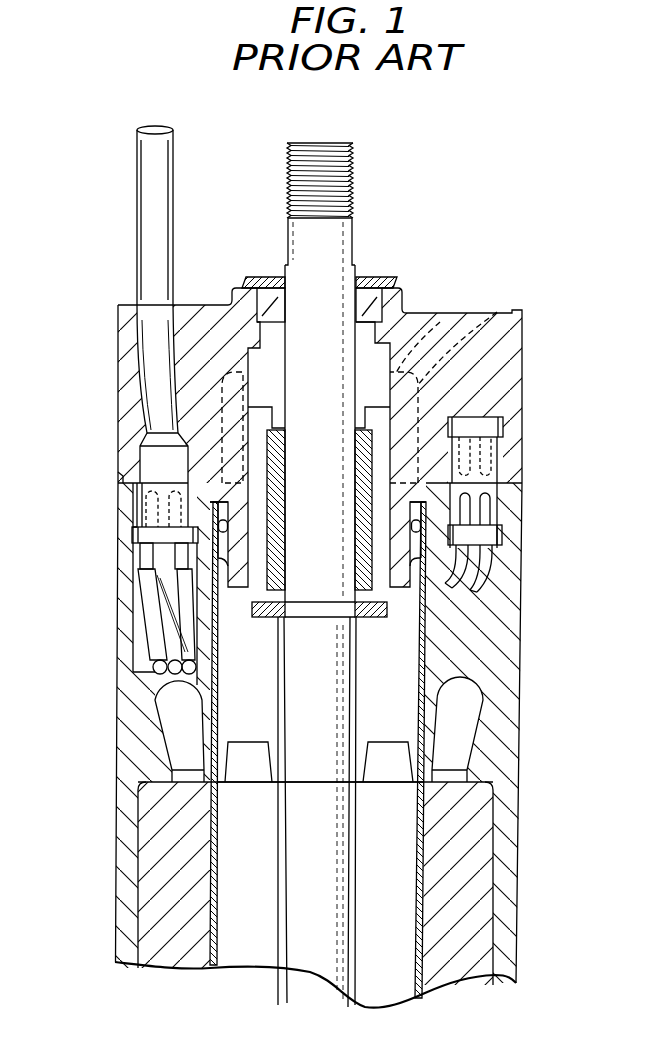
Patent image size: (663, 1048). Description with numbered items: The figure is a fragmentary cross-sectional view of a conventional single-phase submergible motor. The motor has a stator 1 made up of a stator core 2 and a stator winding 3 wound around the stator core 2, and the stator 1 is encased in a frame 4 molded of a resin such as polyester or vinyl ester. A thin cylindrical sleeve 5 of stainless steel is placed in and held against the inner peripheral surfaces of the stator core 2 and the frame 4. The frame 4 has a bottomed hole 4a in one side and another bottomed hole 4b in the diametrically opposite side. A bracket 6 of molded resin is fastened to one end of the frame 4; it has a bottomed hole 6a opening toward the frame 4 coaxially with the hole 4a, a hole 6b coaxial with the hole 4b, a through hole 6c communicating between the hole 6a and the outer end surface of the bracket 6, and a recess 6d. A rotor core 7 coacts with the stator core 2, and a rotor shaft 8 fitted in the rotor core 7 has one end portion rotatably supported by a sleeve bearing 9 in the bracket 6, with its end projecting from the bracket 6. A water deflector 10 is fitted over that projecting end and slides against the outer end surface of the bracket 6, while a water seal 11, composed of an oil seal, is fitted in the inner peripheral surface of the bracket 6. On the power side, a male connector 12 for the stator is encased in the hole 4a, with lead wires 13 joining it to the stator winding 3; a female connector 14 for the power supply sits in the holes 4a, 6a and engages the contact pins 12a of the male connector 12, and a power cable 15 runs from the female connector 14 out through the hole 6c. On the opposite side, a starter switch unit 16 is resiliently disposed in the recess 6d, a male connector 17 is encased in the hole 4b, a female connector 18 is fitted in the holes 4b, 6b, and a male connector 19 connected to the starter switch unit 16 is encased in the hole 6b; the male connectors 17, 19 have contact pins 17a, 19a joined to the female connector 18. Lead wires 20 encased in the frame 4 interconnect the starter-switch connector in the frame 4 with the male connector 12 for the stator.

The stator 1 is at (490, 812).
The stator core 2 is at (490, 933).
The stator winding 3 is at (483, 708).
The frame 4 is at (517, 647).
The bottomed hole 4a is at (140, 490).
The bottomed hole 4b is at (500, 505).
The cylindrical sleeve 5 is at (425, 668).
The bracket 6 is at (516, 364).
The bottomed hole 6a is at (145, 463).
The hole 6b is at (495, 472).
The through hole 6c is at (148, 370).
The recess 6d is at (497, 312).
The rotor core 7 is at (417, 892).
The rotor shaft 8 is at (340, 228).
The sleeve bearing 9 is at (283, 498).
The water deflector 10 is at (360, 276).
The water seal 11 is at (372, 303).
The male connector 12 is at (137, 535).
The contact pins 12a is at (133, 512).
The lead wires 13 is at (148, 638).
The female connector 14 is at (147, 457).
The power cable 15 is at (148, 176).
The starter switch unit 16 is at (440, 322).
The male connector 17 is at (495, 427).
The contact pins 17a is at (492, 455).
The female connector 18 is at (498, 492).
The male connector 19 is at (492, 560).
The contact pins 19a is at (505, 535).
The lead wires 20 is at (488, 590).